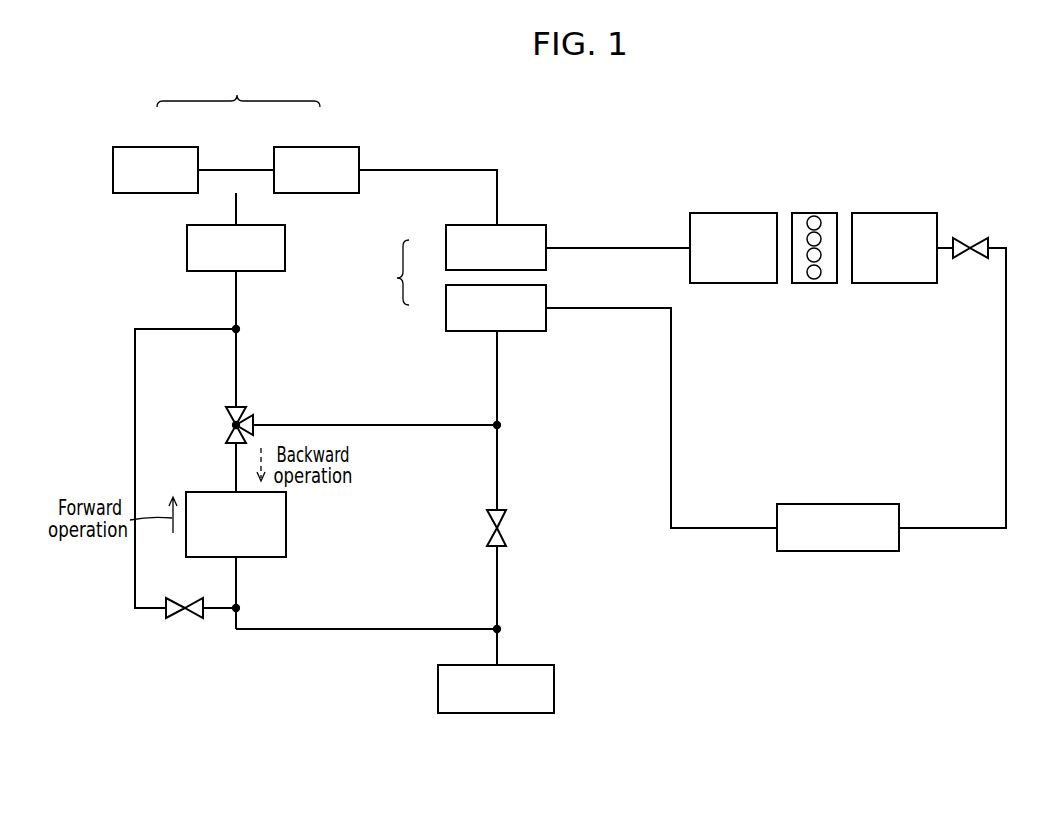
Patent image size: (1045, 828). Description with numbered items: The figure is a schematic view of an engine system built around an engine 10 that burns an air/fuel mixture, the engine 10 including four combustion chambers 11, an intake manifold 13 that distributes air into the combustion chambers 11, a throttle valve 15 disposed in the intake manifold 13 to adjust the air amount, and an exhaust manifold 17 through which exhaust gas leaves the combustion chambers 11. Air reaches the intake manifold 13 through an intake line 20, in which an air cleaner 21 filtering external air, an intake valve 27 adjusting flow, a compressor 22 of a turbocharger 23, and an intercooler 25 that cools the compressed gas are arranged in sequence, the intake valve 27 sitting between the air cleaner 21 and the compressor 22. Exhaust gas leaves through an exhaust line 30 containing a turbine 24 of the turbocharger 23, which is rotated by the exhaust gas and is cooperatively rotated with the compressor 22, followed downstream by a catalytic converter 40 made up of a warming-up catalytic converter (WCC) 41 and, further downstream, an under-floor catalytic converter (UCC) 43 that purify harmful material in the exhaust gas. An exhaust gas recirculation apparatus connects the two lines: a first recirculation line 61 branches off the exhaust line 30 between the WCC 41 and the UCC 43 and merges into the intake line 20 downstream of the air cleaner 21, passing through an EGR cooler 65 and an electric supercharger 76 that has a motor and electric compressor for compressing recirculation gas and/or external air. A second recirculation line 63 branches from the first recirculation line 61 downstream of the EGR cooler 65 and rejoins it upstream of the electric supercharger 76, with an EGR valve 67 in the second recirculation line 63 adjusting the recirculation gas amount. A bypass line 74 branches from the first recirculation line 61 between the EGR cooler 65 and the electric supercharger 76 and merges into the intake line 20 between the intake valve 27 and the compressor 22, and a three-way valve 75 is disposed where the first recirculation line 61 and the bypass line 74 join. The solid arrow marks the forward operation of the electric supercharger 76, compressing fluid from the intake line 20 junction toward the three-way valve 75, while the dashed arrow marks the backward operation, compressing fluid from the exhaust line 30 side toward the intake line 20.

The engine 10 is at (822, 284).
The combustion chambers 11 is at (808, 278).
The intake manifold 13 is at (893, 283).
The throttle valve 15 is at (968, 258).
The exhaust manifold 17 is at (733, 283).
The intake line 20 is at (498, 375).
The air cleaner 21 is at (554, 688).
The compressor 22 is at (446, 308).
The turbocharger 23 is at (392, 272).
The turbine 24 is at (446, 248).
The intercooler 25 is at (838, 551).
The intake valve 27 is at (504, 535).
The exhaust line 30 is at (247, 170).
The catalytic converter 40 is at (238, 89).
The warming-up catalytic converter (WCC) 41 is at (316, 147).
The under-floor catalytic converter (UCC) 43 is at (156, 147).
The first recirculation line 61 is at (237, 300).
The second recirculation line 63 is at (183, 329).
The EGR cooler 65 is at (187, 248).
The EGR valve 67 is at (183, 618).
The bypass line 74 is at (373, 425).
The three-way valve 75 is at (230, 428).
The electric supercharger 76 is at (286, 521).